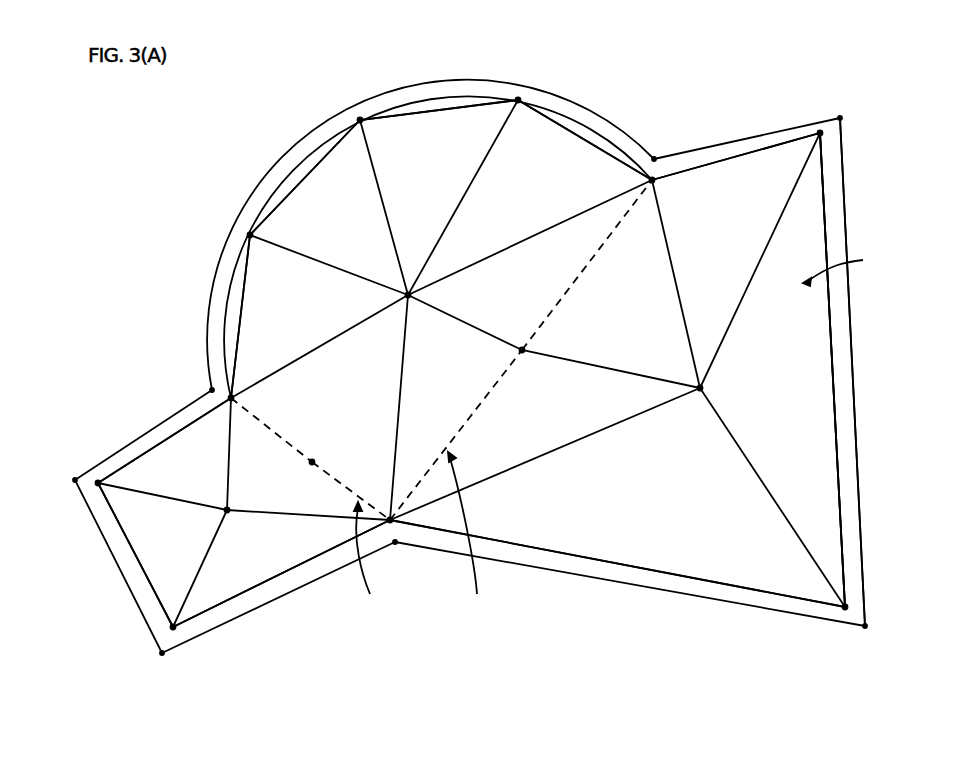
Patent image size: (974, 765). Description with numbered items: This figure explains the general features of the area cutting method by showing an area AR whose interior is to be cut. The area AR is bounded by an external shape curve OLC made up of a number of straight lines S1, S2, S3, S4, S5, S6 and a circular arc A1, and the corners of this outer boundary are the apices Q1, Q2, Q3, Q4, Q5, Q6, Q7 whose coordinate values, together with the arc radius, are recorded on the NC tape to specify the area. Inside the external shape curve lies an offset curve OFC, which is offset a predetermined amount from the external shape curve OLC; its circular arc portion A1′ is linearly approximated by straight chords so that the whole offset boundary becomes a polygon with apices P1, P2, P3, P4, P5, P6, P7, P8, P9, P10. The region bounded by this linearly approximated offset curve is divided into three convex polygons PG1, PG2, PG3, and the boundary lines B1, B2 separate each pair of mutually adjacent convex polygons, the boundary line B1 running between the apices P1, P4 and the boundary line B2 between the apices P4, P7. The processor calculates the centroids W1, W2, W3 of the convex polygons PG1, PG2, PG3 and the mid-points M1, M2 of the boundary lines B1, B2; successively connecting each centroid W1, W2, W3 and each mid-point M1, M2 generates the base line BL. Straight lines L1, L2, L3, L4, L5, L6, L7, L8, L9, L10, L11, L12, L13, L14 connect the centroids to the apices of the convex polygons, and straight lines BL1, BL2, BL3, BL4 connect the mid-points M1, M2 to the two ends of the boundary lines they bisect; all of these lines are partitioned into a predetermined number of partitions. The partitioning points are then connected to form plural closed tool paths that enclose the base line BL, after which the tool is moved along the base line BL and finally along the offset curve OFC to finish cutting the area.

The circular arc A1 is at (465, 80).
The circular arc portion of the offset curve A1′ is at (572, 115).
The straight line S1 is at (143, 430).
The straight line S2 is at (125, 578).
The straight line S3 is at (273, 600).
The straight line S4 is at (578, 575).
The straight line S5 is at (853, 403).
The straight line S6 is at (738, 140).
The straight line connecting centroid and apex L1 is at (227, 449).
The straight line connecting centroid and apex L2 is at (161, 498).
The straight line connecting centroid and apex L3 is at (210, 568).
The straight line connecting centroid and apex L4 is at (280, 514).
The straight line connecting centroid and apex L5 is at (399, 426).
The straight line connecting centroid and apex L6 is at (552, 452).
The straight line connecting centroid and apex L7 is at (735, 442).
The straight line connecting centroid and apex L8 is at (734, 319).
The straight line connecting centroid and apex L9 is at (676, 282).
The straight line connecting centroid and apex L10 is at (529, 237).
The straight line connecting centroid and apex L11 is at (458, 208).
The straight line connecting centroid and apex L12 is at (386, 218).
The straight line connecting centroid and apex L13 is at (322, 264).
The straight line connecting centroid and apex L14 is at (341, 336).
The base line BL is at (637, 376).
The straight line connecting mid-point and boundary line end BL1 is at (357, 470).
The straight line connecting mid-point and boundary line end BL2 is at (274, 429).
The straight line connecting mid-point and boundary line end BL3 is at (488, 393).
The straight line connecting mid-point and boundary line end BL4 is at (578, 278).
The apex of convex polygon P1 is at (246, 404).
The apex of convex polygon P2 is at (91, 484).
The apex of convex polygon P3 is at (178, 632).
The apex of convex polygon P4 is at (390, 530).
The apex of convex polygon P5 is at (851, 609).
The apex of convex polygon P6 is at (827, 129).
The apex of convex polygon P7 is at (667, 192).
The apex of convex polygon P8 is at (520, 118).
The apex of convex polygon P9 is at (376, 131).
The apex of convex polygon P10 is at (271, 228).
The apex of the area Q1 is at (197, 386).
The apex of the area Q2 is at (60, 484).
The apex of the area Q3 is at (166, 666).
The apex of the area Q4 is at (397, 555).
The apex of the area Q5 is at (875, 633).
The apex of the area Q6 is at (839, 104).
The apex of the area Q7 is at (663, 146).
The centroid of convex polygon W1 is at (219, 497).
The centroid of convex polygon W2 is at (719, 391).
The centroid of convex polygon W3 is at (391, 279).
The mid-point of boundary line M1 is at (316, 448).
The mid-point of boundary line M2 is at (515, 337).
The convex polygon PG1 is at (317, 544).
The convex polygon PG2 is at (733, 572).
The convex polygon PG3 is at (256, 330).
The boundary line B1 is at (369, 559).
The boundary line B2 is at (470, 531).
The area AR is at (847, 265).
The external shape curve OLC is at (855, 309).
The offset curve OFC is at (841, 493).